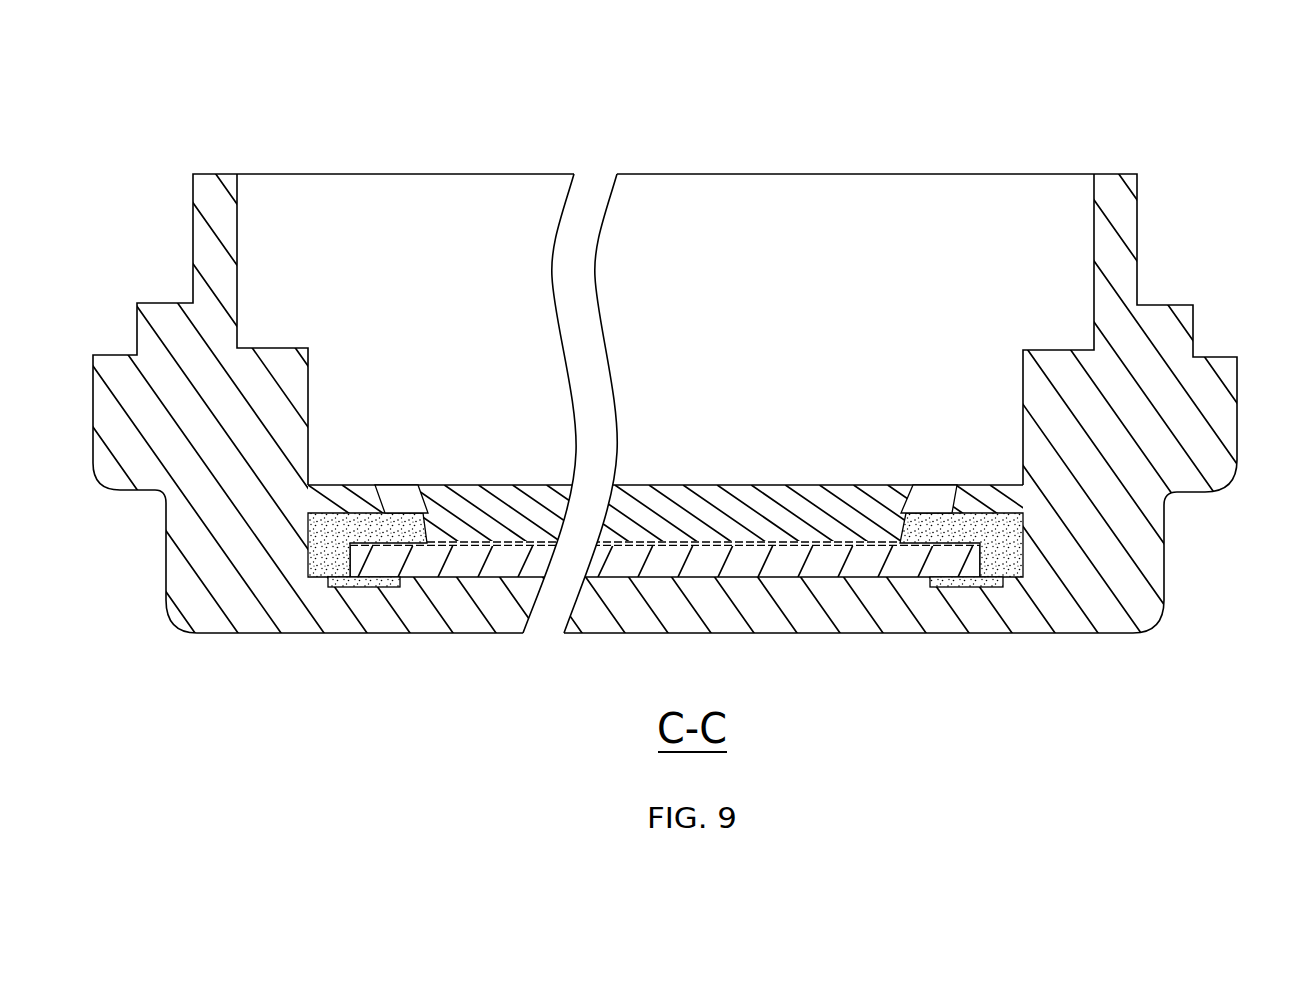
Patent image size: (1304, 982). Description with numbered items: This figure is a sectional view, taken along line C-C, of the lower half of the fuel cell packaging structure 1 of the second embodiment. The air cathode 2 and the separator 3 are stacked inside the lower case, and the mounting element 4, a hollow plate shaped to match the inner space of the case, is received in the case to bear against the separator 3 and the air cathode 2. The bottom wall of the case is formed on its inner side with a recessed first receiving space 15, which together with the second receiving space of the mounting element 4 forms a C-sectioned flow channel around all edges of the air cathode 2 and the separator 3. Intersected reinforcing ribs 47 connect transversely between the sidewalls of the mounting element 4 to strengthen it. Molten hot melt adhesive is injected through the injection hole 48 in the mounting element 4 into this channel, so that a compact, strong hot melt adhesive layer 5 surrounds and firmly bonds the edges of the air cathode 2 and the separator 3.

The housing 1 is at (1137, 240).
The air cathode 2 is at (822, 567).
The separator 3 is at (870, 547).
The mounting element 4 is at (648, 513).
The hot melt adhesive layer 5 is at (322, 550).
The first receiving space 15 is at (955, 583).
The reinforcing ribs 47 is at (480, 517).
The injection hole 48 is at (397, 500).